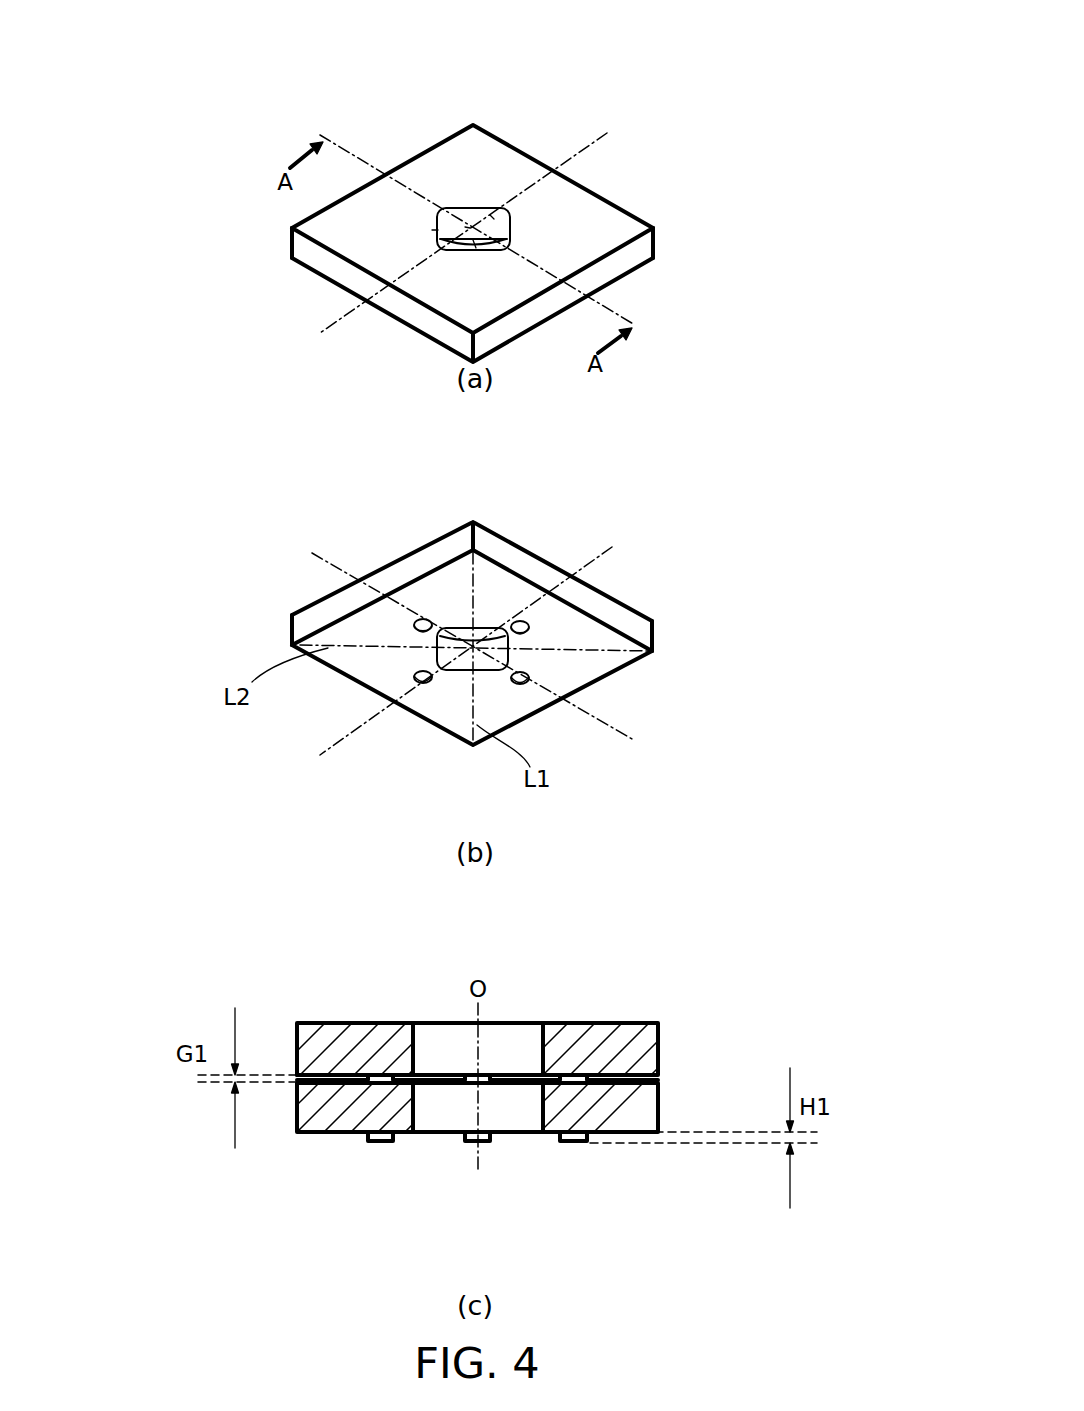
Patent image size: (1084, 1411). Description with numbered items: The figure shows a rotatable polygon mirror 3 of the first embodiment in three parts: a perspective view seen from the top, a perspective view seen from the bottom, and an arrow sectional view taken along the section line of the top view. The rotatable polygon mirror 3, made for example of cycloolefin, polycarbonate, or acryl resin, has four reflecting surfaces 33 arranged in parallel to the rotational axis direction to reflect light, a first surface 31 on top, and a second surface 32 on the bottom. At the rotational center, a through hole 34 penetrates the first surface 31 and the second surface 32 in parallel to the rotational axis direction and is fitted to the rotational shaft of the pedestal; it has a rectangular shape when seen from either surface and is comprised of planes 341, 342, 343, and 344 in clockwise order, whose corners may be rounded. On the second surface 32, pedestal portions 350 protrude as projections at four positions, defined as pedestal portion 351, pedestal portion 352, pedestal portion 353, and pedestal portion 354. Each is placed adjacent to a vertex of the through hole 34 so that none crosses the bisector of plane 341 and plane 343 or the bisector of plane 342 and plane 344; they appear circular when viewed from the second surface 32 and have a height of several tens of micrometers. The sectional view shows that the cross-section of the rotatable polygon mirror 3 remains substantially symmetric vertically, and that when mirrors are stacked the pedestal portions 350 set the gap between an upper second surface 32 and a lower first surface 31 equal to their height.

The rotatable polygon mirror 3 is at (683, 92).
The first surface 31 is at (625, 220).
The second surface 32 is at (582, 663).
The reflecting surface 33 is at (650, 250).
The through hole 34 is at (272, 65).
The plane 341 is at (475, 248).
The plane 342 is at (490, 218).
The plane 343 is at (470, 227).
The plane 344 is at (437, 230).
The pedestal portions 350 is at (472, 1080).
The pedestal portion 351 is at (520, 617).
The pedestal portion 352 is at (523, 683).
The pedestal portion 353 is at (422, 685).
The pedestal portion 354 is at (420, 615).